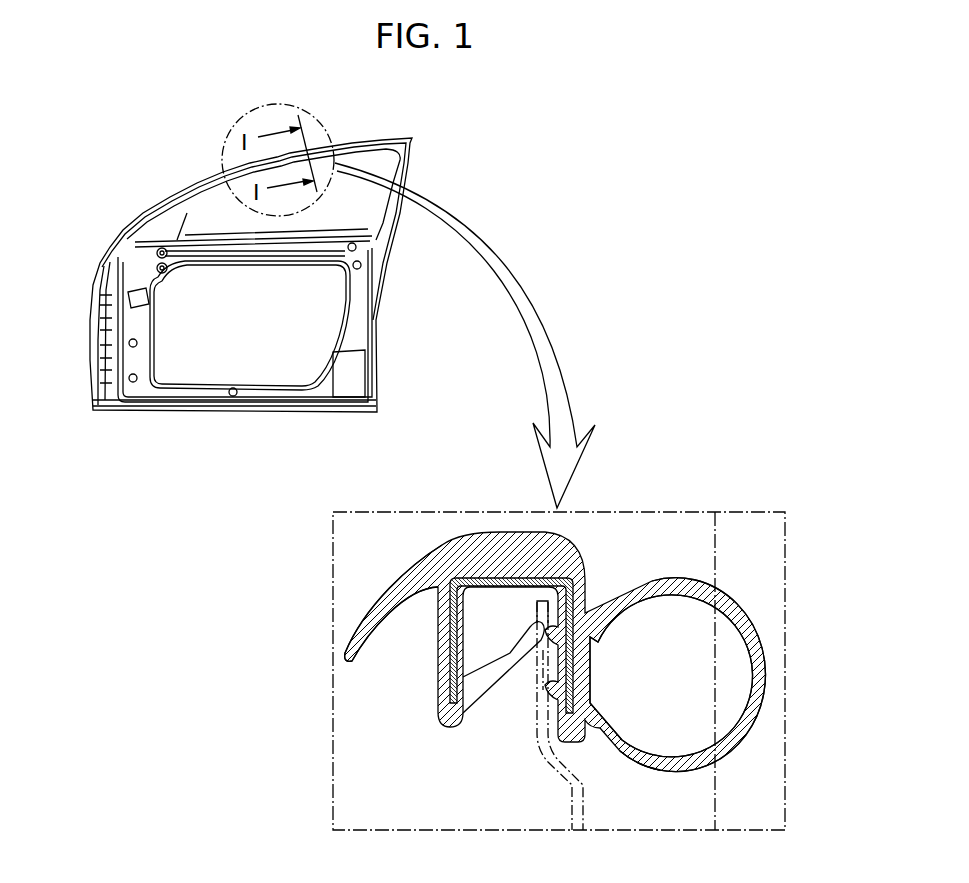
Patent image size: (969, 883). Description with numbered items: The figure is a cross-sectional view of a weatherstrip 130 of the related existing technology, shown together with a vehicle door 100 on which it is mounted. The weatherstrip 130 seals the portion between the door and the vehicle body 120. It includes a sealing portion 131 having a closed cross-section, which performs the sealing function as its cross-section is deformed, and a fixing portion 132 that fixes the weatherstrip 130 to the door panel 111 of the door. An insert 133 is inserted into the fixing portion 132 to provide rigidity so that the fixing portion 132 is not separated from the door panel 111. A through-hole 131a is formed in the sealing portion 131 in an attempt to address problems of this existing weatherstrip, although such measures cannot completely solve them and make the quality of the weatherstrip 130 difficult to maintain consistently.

The vehicle door 100 is at (91, 124).
The door panel 111 is at (552, 768).
The vehicle body 120 is at (749, 544).
The weatherstrip 130 is at (365, 323).
The sealing portion 131 is at (671, 582).
The through-hole 131a is at (630, 750).
The fixing portion 132 is at (505, 580).
The insert 133 is at (438, 548).